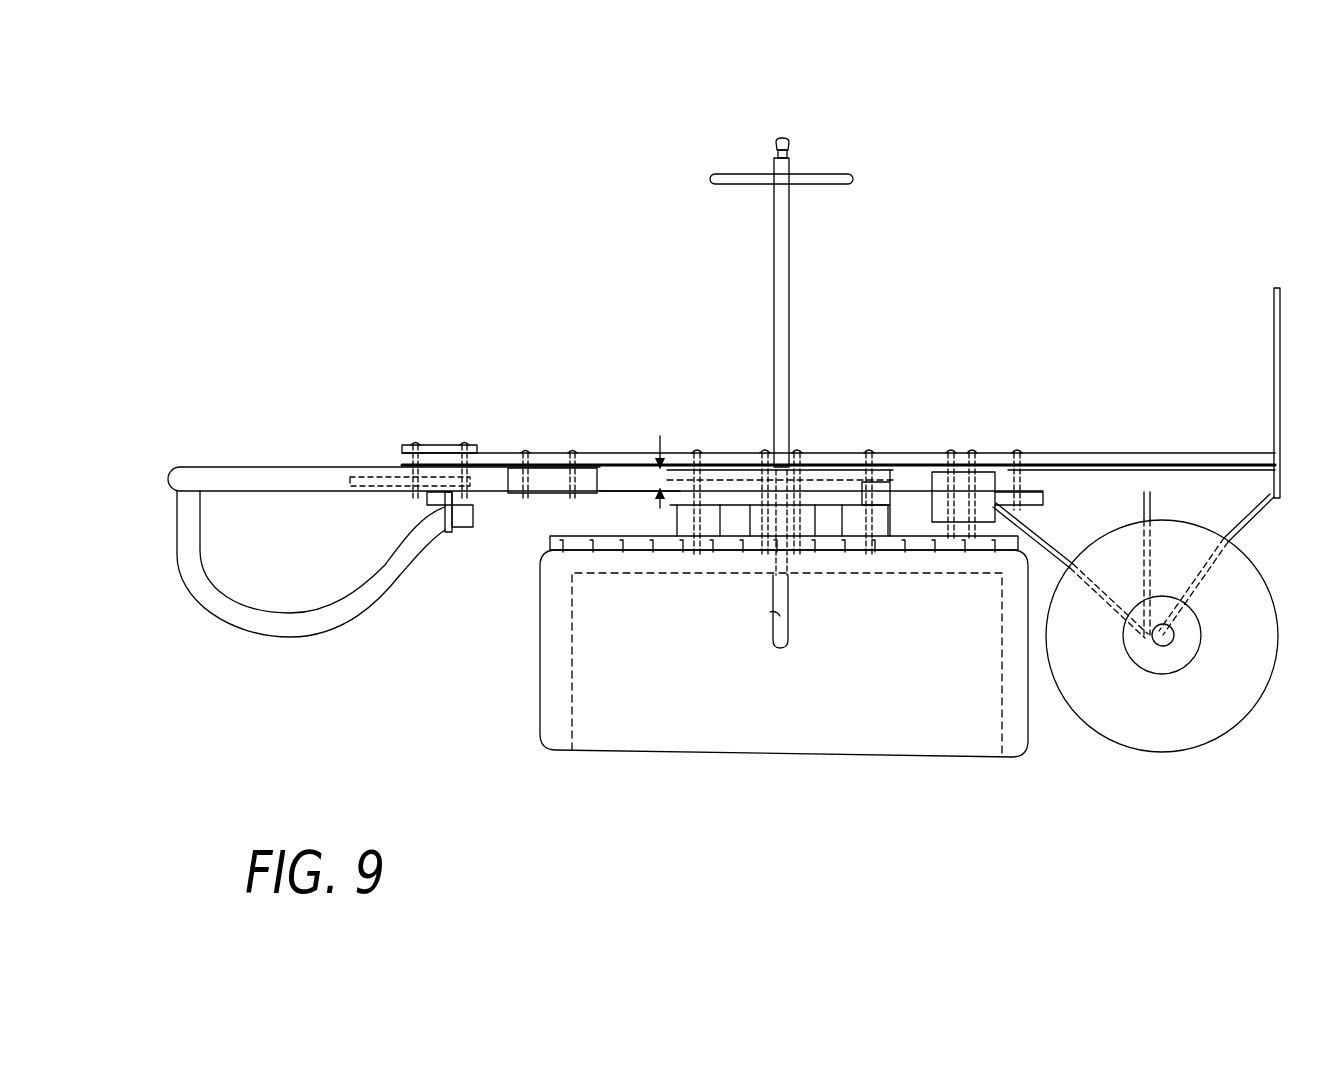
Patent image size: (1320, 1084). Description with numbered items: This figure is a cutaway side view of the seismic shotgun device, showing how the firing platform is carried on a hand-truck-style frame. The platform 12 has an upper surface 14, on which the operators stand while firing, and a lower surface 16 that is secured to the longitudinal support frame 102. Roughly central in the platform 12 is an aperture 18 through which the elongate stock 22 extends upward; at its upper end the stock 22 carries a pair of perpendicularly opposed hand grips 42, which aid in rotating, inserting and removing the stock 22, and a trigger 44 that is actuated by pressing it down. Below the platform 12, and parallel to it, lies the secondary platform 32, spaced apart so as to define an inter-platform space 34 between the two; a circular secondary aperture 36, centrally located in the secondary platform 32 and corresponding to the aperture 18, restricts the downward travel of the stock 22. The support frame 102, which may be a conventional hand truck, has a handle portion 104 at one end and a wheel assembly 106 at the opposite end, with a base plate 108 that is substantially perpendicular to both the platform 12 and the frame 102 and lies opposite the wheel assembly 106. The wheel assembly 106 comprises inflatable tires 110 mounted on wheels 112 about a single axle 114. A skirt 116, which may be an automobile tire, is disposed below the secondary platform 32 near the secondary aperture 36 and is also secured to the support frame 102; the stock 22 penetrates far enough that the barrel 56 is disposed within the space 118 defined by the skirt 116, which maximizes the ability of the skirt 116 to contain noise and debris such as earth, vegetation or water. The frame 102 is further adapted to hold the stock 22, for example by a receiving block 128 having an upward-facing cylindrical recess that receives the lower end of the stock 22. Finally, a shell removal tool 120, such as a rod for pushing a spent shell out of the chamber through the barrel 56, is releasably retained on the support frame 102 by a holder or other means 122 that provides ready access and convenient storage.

The platform 12 is at (396, 444).
The upper surface 14 is at (614, 446).
The lower surface 16 is at (622, 483).
The aperture 18 is at (798, 448).
The elongate stock 22 is at (790, 252).
The secondary platform 32 is at (718, 500).
The inter-platform space 34 is at (660, 434).
The secondary aperture 36 is at (772, 483).
The hand grip 42 is at (828, 178).
The trigger 44 is at (792, 140).
The barrel 56 is at (768, 640).
The longitudinal support frame 102 is at (275, 462).
The handle portion 104 is at (186, 584).
The wheel assembly 106 is at (1094, 842).
The base plate 108 is at (1266, 328).
The inflatable tire 110 is at (1176, 724).
The wheel 112 is at (1142, 656).
The axle 114 is at (1182, 641).
The skirt 116 is at (778, 613).
The space 118 is at (787, 664).
The shell removal tool 120 is at (370, 490).
The holder 122 is at (530, 500).
The receiving block 128 is at (957, 492).